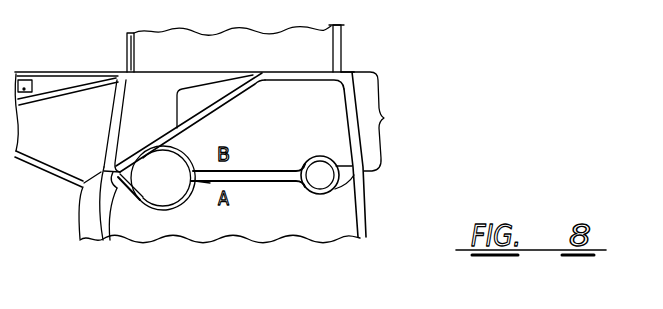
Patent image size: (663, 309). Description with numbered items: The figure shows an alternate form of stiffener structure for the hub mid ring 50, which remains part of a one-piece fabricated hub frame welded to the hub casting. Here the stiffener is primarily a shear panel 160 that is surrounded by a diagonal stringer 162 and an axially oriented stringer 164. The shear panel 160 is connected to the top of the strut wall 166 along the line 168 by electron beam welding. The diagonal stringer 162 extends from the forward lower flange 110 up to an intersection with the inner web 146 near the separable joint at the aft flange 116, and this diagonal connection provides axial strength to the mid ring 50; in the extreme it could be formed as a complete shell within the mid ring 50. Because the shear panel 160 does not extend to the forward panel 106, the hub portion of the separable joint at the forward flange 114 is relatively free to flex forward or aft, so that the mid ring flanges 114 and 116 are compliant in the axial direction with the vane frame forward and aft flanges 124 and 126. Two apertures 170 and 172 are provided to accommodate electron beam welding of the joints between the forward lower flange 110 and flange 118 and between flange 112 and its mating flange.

The mid ring 50 is at (387, 121).
The forward panel 106 is at (110, 130).
The forward lower flange 110 is at (83, 185).
The flange 112 is at (383, 167).
The forward flange 114 is at (116, 72).
The aft flange 116 is at (350, 68).
The flange 118 is at (97, 193).
The vane frame forward flange 124 is at (127, 45).
The vane frame aft flange 126 is at (343, 44).
The inner web 146 is at (250, 84).
The shear panel 160 is at (306, 113).
The diagonal stringer 162 is at (199, 122).
The axially oriented stringer 164 is at (257, 170).
The strut wall 166 is at (307, 222).
The weld line 168 is at (213, 184).
The aperture 170 is at (158, 180).
The aperture 172 is at (323, 175).